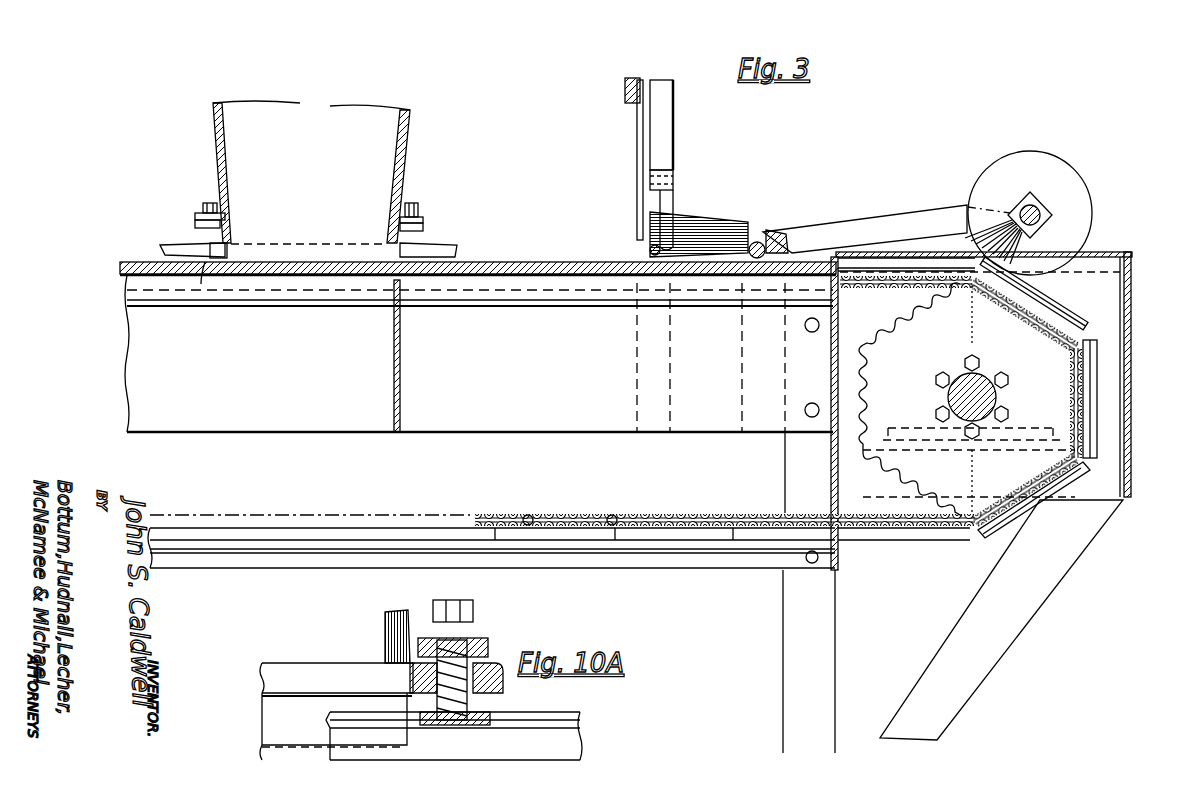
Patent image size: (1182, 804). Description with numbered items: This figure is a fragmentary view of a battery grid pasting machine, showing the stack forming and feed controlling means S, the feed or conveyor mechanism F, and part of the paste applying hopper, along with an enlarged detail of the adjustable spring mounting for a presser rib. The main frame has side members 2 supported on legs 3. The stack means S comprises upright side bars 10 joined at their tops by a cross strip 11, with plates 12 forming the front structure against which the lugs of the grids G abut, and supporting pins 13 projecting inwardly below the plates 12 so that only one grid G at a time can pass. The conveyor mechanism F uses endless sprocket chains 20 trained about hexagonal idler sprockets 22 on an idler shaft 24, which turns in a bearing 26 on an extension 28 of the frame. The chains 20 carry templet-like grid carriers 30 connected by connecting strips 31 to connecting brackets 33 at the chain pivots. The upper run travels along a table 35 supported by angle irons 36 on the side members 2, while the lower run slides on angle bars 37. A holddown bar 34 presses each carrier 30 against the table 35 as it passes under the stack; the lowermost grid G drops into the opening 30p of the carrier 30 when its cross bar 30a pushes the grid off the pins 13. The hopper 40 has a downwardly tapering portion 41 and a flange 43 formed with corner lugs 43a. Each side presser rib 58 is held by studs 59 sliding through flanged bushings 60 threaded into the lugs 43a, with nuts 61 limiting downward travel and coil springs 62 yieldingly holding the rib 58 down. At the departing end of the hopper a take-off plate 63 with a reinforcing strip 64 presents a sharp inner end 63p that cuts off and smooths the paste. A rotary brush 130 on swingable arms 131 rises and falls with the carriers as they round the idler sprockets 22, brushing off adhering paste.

In FIG. 3, the side members 2 is at (521, 363).
In FIG. 3, the legs 3 is at (813, 628).
In FIG. 3, the upright side bars 10 is at (662, 122).
In FIG. 3, the cross strip 11 is at (624, 93).
In FIG. 3, the plates 12 is at (636, 146).
In FIG. 3, the supporting pins 13 is at (650, 250).
In FIG. 3, the endless sprocket chains 20 is at (684, 516).
In FIG. 3, the idler sprockets 22 is at (890, 373).
In FIG. 3, the idler shaft 24 is at (974, 394).
In FIG. 3, the bearing 26 is at (916, 428).
In FIG. 3, the extension 28 is at (980, 620).
In FIG. 3, the grid carriers 30 is at (360, 256).
In FIG. 3, the opening 30p is at (774, 232).
In FIG. 3, the cross bar 30a is at (500, 258).
In FIG. 3, the connecting strips 31 is at (1058, 310).
In FIG. 3, the connecting brackets 33 is at (534, 516).
In FIG. 3, the holddown bar 34 is at (760, 242).
In FIG. 3, the table 35 is at (546, 258).
In FIG. 3, the angle irons 36 is at (290, 300).
In FIG. 3, the angle bars 37 is at (318, 548).
In FIG. 10A, the angle bars 37 is at (397, 636).
In FIG. 3, the hopper 40 is at (416, 148).
In FIG. 3, the downwardly tapering portion 41 is at (228, 158).
In FIG. 10A, the flange 43 is at (318, 672).
In FIG. 3, the lugs 43a is at (198, 234).
In FIG. 10A, the lugs 43a is at (490, 659).
In FIG. 3, the presser ribs 58 is at (476, 260).
In FIG. 10A, the presser ribs 58 is at (557, 750).
In FIG. 3, the studs 59 is at (210, 203).
In FIG. 10A, the studs 59 is at (455, 645).
In FIG. 3, the flanged bushing 60 is at (428, 228).
In FIG. 10A, the flanged bushing 60 is at (488, 640).
In FIG. 3, the nuts 61 is at (196, 216).
In FIG. 10A, the nuts 61 is at (438, 602).
In FIG. 10A, the coil springs 62 is at (476, 704).
In FIG. 3, the take-off plate 63 is at (196, 272).
In FIG. 3, the sharp inner end 63p is at (232, 262).
In FIG. 3, the reinforcing strip 64 is at (236, 244).
In FIG. 3, the rotary brush 130 is at (998, 186).
In FIG. 3, the swingable arms 131 is at (900, 222).
In FIG. 3, the feed or conveyor mechanism F is at (876, 286).
In FIG. 3, the grids G is at (700, 220).
In FIG. 3, the stack forming and feed controlling means S is at (674, 150).